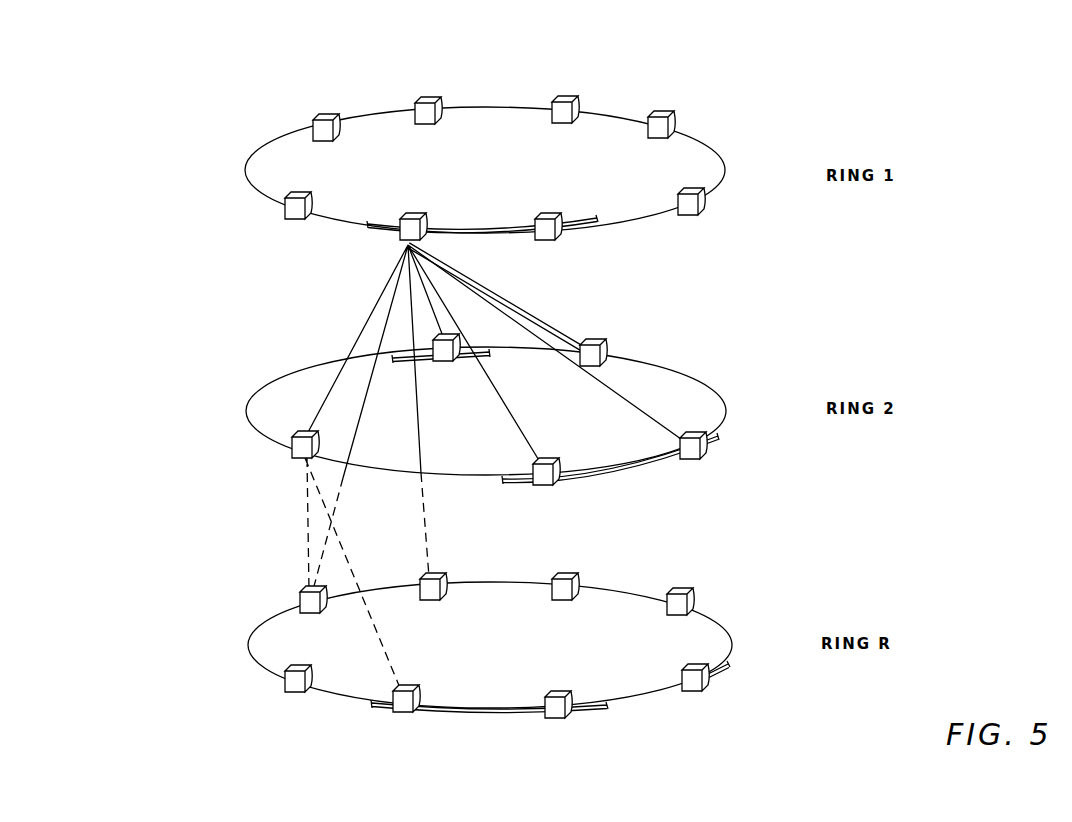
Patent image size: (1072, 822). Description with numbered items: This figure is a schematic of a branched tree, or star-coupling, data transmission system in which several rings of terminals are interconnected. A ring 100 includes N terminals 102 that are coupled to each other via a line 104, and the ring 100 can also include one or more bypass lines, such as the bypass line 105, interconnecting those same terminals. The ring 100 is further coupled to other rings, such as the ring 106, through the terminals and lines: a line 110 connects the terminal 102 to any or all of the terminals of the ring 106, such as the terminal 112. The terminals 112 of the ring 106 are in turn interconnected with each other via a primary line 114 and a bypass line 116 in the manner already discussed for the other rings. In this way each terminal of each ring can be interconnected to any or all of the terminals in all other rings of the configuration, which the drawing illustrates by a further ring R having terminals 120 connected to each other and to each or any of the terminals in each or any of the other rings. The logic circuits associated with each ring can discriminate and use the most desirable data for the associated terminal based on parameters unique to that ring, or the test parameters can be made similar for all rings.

The ring 100 is at (471, 376).
The terminal 102 is at (414, 218).
The line 104 is at (338, 222).
The bypass line 105 is at (382, 221).
The ring 106 is at (679, 346).
The line 110 is at (517, 315).
The terminal 112 is at (547, 486).
The primary line 114 is at (262, 435).
The bypass line 116 is at (472, 358).
The terminal 120 is at (297, 607).
The number of terminals N is at (708, 577).